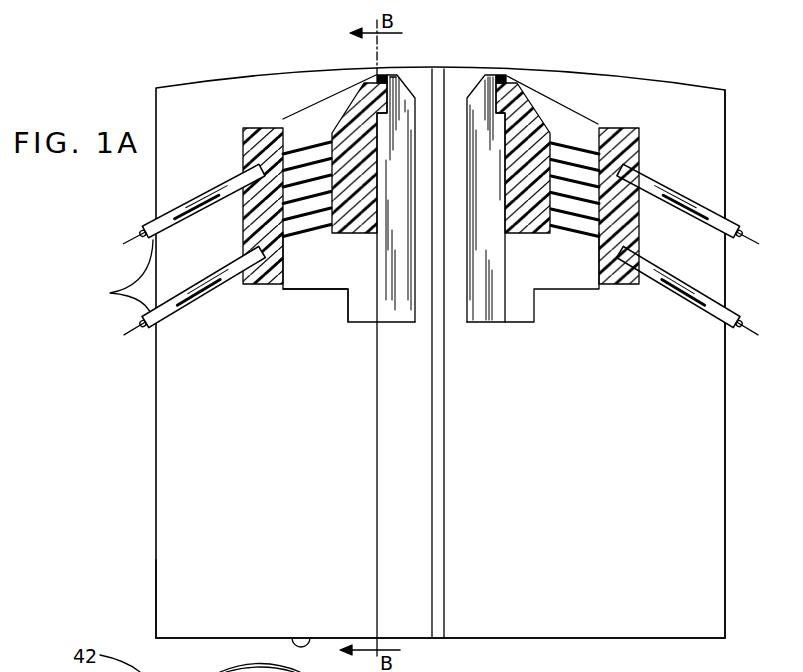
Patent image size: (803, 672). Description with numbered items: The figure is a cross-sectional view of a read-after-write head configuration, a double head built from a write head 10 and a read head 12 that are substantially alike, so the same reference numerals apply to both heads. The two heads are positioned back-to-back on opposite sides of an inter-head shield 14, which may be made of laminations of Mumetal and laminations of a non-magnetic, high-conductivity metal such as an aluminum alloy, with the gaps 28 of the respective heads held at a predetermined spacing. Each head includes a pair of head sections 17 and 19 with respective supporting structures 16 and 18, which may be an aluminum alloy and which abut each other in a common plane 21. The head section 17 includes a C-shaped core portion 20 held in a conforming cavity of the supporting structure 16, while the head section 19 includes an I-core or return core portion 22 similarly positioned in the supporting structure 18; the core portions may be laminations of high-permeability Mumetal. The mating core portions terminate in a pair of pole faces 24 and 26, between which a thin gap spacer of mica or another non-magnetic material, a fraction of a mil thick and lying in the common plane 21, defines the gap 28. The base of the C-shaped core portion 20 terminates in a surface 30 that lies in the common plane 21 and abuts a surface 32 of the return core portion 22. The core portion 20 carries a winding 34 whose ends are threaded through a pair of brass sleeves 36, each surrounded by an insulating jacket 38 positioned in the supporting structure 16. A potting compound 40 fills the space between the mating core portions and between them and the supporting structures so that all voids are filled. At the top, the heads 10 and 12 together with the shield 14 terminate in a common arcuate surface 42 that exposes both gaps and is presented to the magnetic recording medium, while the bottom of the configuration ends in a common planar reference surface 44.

The write head 10 is at (156, 182).
The read head 12 is at (727, 184).
The inter-head shield 14 is at (442, 90).
The supporting structure 16 is at (158, 568).
The head section 17 is at (268, 470).
The supporting structure 18 is at (408, 627).
The head section 19 is at (415, 470).
The C-shaped core portion 20 is at (312, 278).
The common plane 21 is at (377, 533).
The return core portion 22 is at (413, 285).
The pole face 24 is at (373, 78).
The pole face 26 is at (394, 77).
The gap 28 is at (383, 74).
The surface 30 is at (403, 342).
The surface 32 is at (396, 221).
The winding 34 is at (315, 140).
The brass sleeves 36 is at (171, 252).
The insulating jacket 38 is at (211, 281).
The potting compound 40 is at (273, 140).
The common arcuate surface 42 is at (466, 78).
The common planar reference surface 44 is at (293, 636).